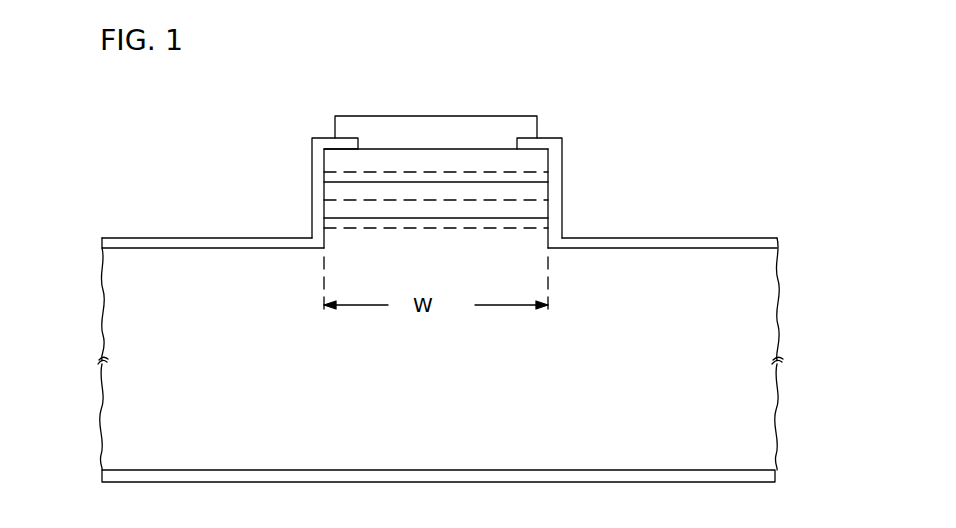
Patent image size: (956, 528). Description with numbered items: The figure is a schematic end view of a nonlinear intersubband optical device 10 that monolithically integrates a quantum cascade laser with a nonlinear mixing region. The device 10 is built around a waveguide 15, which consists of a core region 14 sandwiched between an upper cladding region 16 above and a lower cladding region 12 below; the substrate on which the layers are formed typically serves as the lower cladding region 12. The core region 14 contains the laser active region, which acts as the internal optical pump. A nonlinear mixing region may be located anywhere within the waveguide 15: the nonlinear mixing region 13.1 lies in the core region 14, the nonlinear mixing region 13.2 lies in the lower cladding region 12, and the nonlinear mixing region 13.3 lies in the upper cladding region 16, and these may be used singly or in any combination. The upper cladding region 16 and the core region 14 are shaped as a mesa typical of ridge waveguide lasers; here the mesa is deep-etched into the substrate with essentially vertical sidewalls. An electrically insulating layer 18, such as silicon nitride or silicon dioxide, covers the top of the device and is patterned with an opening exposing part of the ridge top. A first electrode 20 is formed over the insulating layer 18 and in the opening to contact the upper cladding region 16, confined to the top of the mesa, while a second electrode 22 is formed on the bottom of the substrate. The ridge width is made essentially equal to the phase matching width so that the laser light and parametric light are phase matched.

The nonlinear optical device 10 is at (658, 85).
The lower cladding region 12 is at (329, 236).
The nonlinear mixing region 13.1 is at (338, 194).
The nonlinear mixing region 13.2 is at (410, 228).
The nonlinear mixing region 13.3 is at (397, 172).
The core region 14 is at (550, 205).
The waveguide 15 is at (253, 138).
The upper cladding region 16 is at (333, 167).
The electrically insulating layer 18 is at (780, 244).
The first electrode 20 is at (507, 116).
The second electrode 22 is at (785, 476).